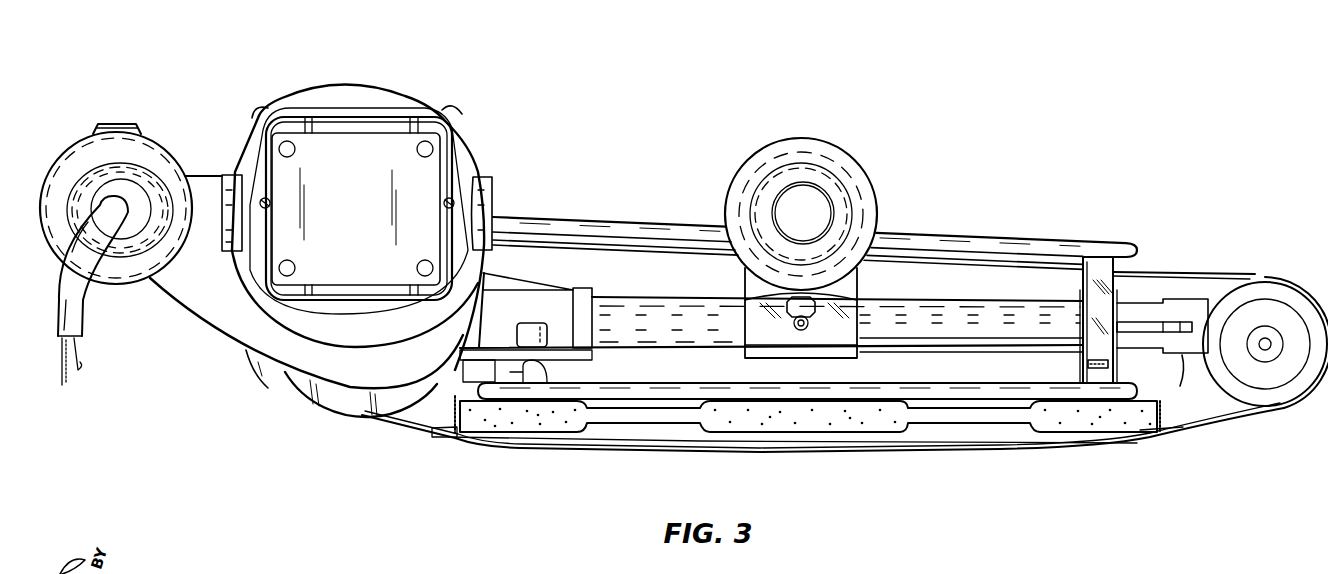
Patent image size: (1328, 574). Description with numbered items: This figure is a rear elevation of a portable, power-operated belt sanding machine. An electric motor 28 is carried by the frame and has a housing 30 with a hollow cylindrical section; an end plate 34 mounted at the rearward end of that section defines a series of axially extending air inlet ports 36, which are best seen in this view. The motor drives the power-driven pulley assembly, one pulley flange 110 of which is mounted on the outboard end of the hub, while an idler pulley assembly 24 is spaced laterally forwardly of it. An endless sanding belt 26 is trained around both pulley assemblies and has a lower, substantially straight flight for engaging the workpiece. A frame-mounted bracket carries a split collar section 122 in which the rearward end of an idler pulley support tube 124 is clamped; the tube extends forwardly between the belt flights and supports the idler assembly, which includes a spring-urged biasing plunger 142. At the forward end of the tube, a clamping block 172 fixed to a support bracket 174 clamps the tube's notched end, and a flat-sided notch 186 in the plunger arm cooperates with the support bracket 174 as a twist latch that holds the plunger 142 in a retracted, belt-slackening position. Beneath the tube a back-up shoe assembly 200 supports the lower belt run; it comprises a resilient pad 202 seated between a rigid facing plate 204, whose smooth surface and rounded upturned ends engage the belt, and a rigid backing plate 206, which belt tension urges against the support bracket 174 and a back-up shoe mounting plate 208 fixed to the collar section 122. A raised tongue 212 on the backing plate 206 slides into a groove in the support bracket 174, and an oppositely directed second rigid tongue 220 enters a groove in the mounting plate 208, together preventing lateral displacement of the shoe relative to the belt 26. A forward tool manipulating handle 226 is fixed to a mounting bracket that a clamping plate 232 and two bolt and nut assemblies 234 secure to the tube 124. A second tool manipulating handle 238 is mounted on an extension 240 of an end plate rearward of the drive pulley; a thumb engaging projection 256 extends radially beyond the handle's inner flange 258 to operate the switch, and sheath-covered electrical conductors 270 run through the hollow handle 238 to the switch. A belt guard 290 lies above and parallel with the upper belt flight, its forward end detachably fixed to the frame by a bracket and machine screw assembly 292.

The idler pulley assembly 24 is at (1283, 272).
The sanding belt 26 is at (1192, 271).
The electric motor 28 is at (371, 203).
The housing 30 is at (413, 100).
The end plate 34 is at (457, 153).
The air inlet ports 36 is at (358, 128).
The pulley flange 110 is at (313, 407).
The split collar section 122 is at (578, 289).
The idler pulley support tube 124 is at (990, 347).
The biasing plunger 142 is at (1190, 382).
The clamping block 172 is at (1118, 293).
The support bracket 174 is at (1113, 370).
The notch 186 is at (1158, 335).
The back-up shoe assembly 200 is at (807, 417).
The resilient pad 202 is at (842, 424).
The facing plate 204 is at (665, 435).
The backing plate 206 is at (665, 405).
The back-up shoe mounting plate 208 is at (512, 374).
The tongue 212 is at (1086, 366).
The second rigid tongue 220 is at (495, 368).
The forward tool manipulating handle 226 is at (864, 166).
The clamping plate 232 is at (758, 353).
The bolt and nut assemblies 234 is at (808, 320).
The second tool manipulating handle 238 is at (92, 172).
The extension 240 is at (190, 177).
The thumb engaging projection 256 is at (112, 123).
The flange 258 is at (50, 171).
The electrical conductors 270 is at (80, 366).
The belt guard 290 is at (1033, 239).
The bracket and machine screw assembly 292 is at (1087, 277).